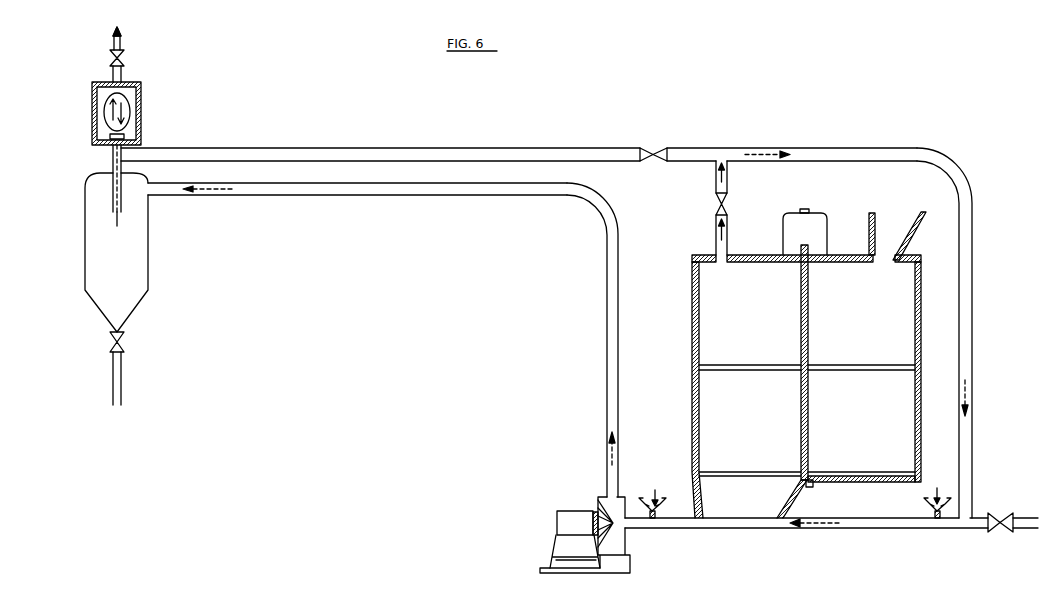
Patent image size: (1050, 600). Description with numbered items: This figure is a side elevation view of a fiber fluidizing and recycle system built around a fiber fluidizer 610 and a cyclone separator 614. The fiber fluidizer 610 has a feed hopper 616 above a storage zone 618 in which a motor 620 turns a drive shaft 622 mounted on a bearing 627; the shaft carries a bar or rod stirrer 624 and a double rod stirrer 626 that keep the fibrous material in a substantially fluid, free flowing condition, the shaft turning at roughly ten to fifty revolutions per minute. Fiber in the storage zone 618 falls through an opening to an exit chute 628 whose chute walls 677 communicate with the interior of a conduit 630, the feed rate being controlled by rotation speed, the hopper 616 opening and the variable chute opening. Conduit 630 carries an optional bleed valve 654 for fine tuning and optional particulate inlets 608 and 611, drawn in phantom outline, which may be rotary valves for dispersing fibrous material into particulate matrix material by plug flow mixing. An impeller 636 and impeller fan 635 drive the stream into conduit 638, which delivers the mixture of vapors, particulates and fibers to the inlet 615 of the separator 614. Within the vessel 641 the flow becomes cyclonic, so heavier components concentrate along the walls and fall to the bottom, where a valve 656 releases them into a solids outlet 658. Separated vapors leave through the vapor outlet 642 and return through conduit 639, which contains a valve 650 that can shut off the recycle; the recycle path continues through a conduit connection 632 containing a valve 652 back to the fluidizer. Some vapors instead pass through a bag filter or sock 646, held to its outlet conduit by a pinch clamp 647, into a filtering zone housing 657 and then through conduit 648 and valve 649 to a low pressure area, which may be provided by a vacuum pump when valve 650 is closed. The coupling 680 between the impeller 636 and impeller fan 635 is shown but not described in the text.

The particulate inlet 608 is at (942, 495).
The fiber fluidizer 610 is at (873, 148).
The particulate inlet 611 is at (652, 497).
The separator 614 is at (86, 252).
The inlet 615 is at (149, 197).
The feed hopper 616 is at (908, 230).
The storage zone 618 is at (878, 308).
The motor 620 is at (808, 212).
The drive shaft 622 is at (801, 308).
The bar or rod stirrer 624 is at (850, 372).
The double rod stirrer 626 is at (745, 471).
The bearing 627 is at (810, 487).
The exit chute 628 is at (758, 504).
The conduit 630 is at (860, 528).
The conduit connection 632 is at (716, 233).
The impeller fan 635 is at (611, 531).
The impeller 636 is at (557, 518).
The conduit 638 is at (607, 328).
The conduit 639 is at (972, 233).
The vessel 641 is at (85, 240).
The vapor outlet 642 is at (119, 213).
The filter 646 is at (100, 114).
The pinch clamp 647 is at (125, 137).
The conduit 648 is at (112, 76).
The valve 649 is at (122, 58).
The valve 650 is at (649, 148).
The valve 652 is at (716, 204).
The bleed valve 654 is at (1002, 532).
The valve 656 is at (110, 343).
The filtering zone housing 657 is at (141, 97).
The solids outlet 658 is at (117, 410).
The chute walls 677 is at (776, 497).
The coupling 680 is at (596, 502).